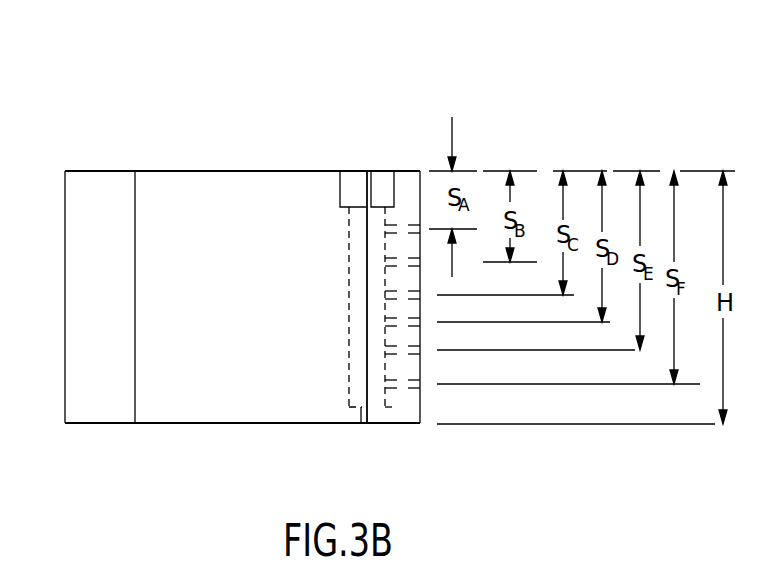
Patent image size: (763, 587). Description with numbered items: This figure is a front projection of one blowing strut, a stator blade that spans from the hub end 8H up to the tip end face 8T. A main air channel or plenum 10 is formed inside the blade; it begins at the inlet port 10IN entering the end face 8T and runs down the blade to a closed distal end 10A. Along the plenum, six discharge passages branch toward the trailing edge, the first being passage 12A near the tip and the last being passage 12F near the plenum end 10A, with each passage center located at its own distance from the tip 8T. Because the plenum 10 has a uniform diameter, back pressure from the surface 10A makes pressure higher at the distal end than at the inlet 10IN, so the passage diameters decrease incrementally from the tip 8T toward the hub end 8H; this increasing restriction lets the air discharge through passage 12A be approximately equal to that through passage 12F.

The end face 8T is at (188, 171).
The hub end 8H is at (150, 423).
The port 10IN is at (355, 171).
The plenum 10 is at (382, 180).
The distal end of the plenum 10A is at (360, 423).
The discharge passage 12A is at (402, 226).
The discharge passage 12F is at (384, 384).